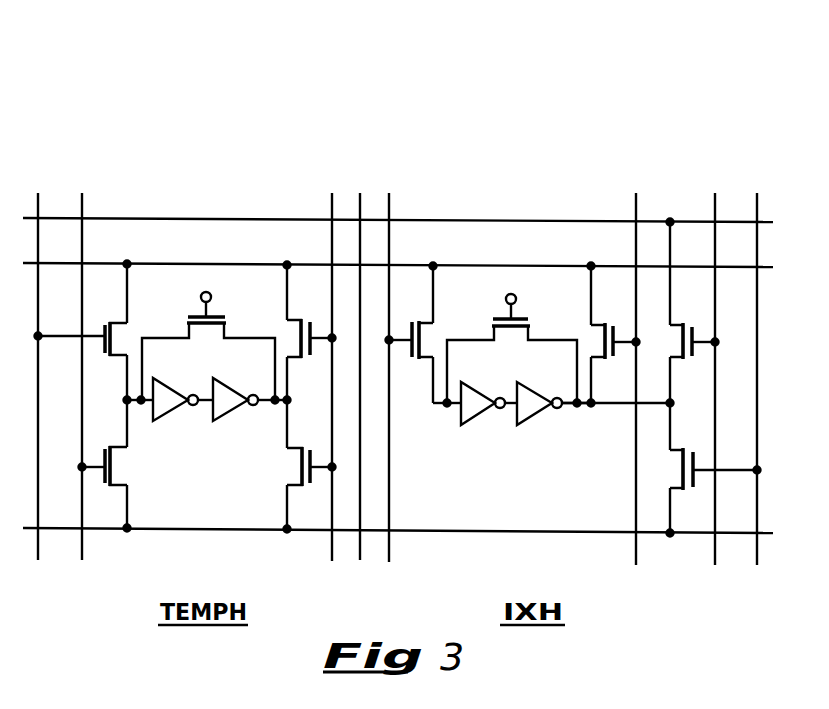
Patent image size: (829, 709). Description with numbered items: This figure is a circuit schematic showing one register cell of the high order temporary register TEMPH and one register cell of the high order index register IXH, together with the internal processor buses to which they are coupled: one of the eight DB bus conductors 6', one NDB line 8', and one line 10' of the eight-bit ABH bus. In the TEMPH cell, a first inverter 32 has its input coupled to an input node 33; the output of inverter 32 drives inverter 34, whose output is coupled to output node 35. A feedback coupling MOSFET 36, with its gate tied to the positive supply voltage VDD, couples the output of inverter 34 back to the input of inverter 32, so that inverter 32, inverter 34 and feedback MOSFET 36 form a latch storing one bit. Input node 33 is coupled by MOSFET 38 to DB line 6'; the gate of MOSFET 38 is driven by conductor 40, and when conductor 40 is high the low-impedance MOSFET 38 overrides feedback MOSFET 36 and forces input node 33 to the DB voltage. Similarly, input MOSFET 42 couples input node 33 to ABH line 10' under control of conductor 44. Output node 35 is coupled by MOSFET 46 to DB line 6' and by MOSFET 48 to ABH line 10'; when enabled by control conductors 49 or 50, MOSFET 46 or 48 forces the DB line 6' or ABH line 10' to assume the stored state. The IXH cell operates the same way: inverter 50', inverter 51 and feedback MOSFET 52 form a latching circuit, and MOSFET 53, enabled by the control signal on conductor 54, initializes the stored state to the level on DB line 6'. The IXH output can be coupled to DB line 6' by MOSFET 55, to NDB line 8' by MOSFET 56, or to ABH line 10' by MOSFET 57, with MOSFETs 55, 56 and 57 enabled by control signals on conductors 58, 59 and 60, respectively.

The NDB line 8' is at (398, 207).
The DB bus conductor 6' is at (398, 253).
The ABH line 10' is at (398, 547).
The conductor 40 is at (42, 394).
The conductor 44 is at (82, 420).
The control conductor 50 is at (326, 311).
The control conductor 49 is at (360, 555).
The conductor 54 is at (390, 497).
The conductor 58 is at (638, 370).
The conductor 59 is at (717, 326).
The conductor 60 is at (757, 416).
The MOSFET 38 is at (122, 320).
The input MOSFET 42 is at (118, 472).
The MOSFET 46 is at (292, 320).
The MOSFET 48 is at (292, 448).
The feedback coupling MOSFET 36 is at (218, 332).
The input node 33 is at (123, 399).
The first inverter 32 is at (162, 420).
The inverter 34 is at (222, 420).
The output node 35 is at (290, 399).
The MOSFET 53 is at (424, 320).
The MOSFET 55 is at (606, 322).
The feedback MOSFET 52 is at (522, 334).
The inverter 50' is at (489, 417).
The inverter 51 is at (526, 424).
The MOSFET 56 is at (676, 357).
The MOSFET 57 is at (675, 490).